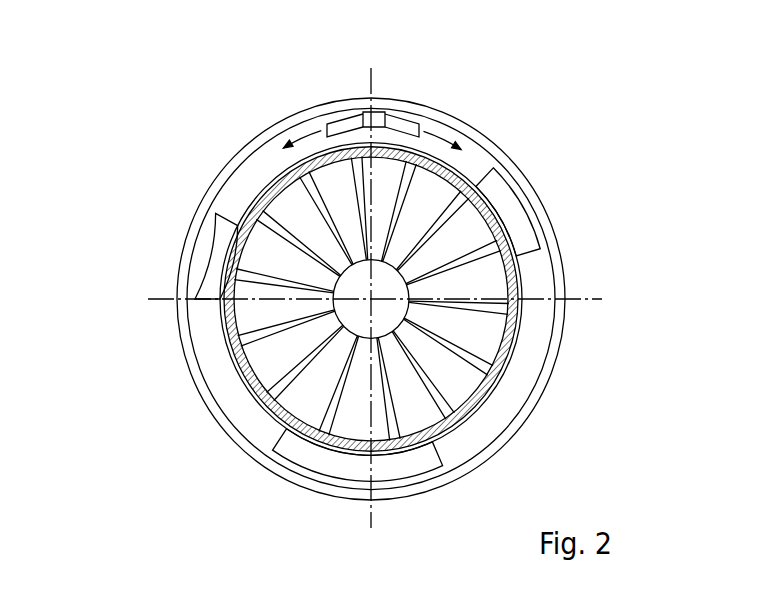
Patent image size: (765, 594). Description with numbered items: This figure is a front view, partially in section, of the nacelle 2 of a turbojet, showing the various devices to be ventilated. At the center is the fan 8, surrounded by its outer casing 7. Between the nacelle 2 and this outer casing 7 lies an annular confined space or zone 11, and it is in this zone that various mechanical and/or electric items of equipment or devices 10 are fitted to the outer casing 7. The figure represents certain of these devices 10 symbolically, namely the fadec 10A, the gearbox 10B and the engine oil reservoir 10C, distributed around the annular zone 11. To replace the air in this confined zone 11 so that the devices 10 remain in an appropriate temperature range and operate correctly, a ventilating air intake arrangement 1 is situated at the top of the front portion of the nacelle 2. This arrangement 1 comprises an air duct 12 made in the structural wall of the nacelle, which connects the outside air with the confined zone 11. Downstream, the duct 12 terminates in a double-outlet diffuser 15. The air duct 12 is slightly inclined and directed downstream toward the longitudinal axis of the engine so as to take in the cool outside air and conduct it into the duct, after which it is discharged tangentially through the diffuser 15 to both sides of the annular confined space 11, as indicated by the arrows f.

The ventilating air intake arrangement 1 is at (369, 111).
The nacelle 2 is at (233, 153).
The outer casing 7 is at (523, 277).
The fan 8 is at (237, 365).
The devices 10 is at (372, 331).
The fadec 10A is at (517, 217).
The gearbox 10B is at (388, 465).
The engine oil reservoir 10C is at (205, 258).
The annular space or zone 11 is at (540, 348).
The air duct 12 is at (380, 121).
The diffuser 15 is at (342, 125).
The arrows f is at (322, 134).